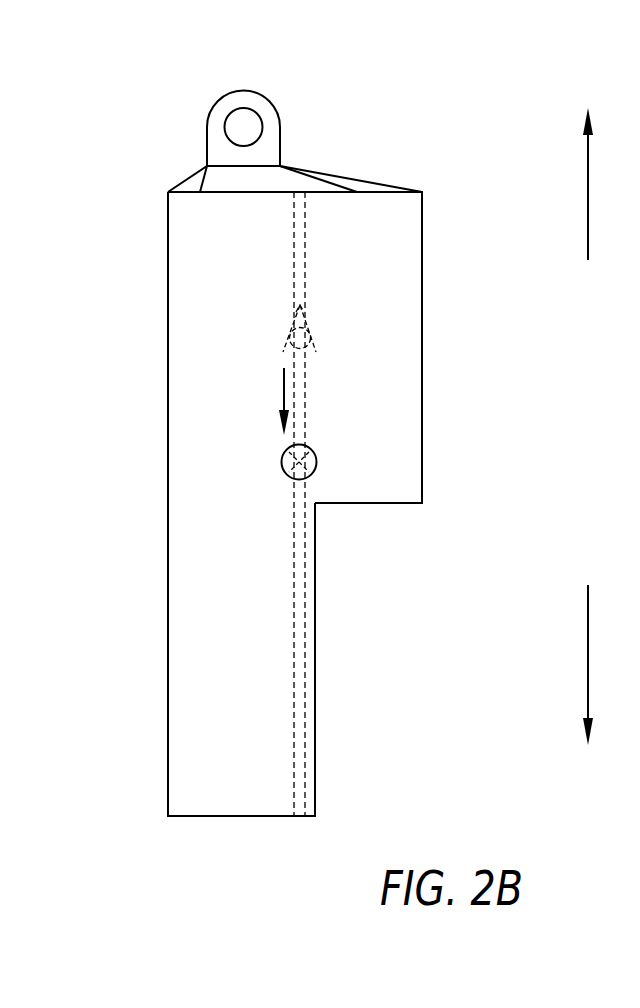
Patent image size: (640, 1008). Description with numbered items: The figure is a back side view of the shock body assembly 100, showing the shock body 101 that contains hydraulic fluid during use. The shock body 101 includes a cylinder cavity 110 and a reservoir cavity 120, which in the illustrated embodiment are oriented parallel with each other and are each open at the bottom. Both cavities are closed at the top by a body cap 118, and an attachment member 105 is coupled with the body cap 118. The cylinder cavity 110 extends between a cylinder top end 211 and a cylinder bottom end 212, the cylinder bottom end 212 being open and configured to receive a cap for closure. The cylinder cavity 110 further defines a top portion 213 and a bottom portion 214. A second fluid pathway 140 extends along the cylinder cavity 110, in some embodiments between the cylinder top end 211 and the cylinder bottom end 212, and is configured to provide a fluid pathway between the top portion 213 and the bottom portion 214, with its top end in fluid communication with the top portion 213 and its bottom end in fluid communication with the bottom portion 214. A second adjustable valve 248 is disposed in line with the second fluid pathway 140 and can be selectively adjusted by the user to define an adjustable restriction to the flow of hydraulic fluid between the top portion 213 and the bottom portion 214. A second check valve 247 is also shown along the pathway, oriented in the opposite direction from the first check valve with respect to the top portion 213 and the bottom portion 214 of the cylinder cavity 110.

The shock body assembly 100 is at (420, 112).
The shock body 101 is at (150, 338).
The attachment member 105 is at (223, 126).
The cylinder cavity 110 is at (187, 585).
The body cap 118 is at (297, 183).
The reservoir cavity 120 is at (363, 356).
The second fluid pathway 140 is at (303, 730).
The cylinder top end 211 is at (363, 187).
The cylinder bottom end 212 is at (244, 816).
The top portion 213 is at (150, 237).
The bottom portion 214 is at (152, 767).
The second check valve 247 is at (306, 327).
The second adjustable valve 248 is at (318, 462).